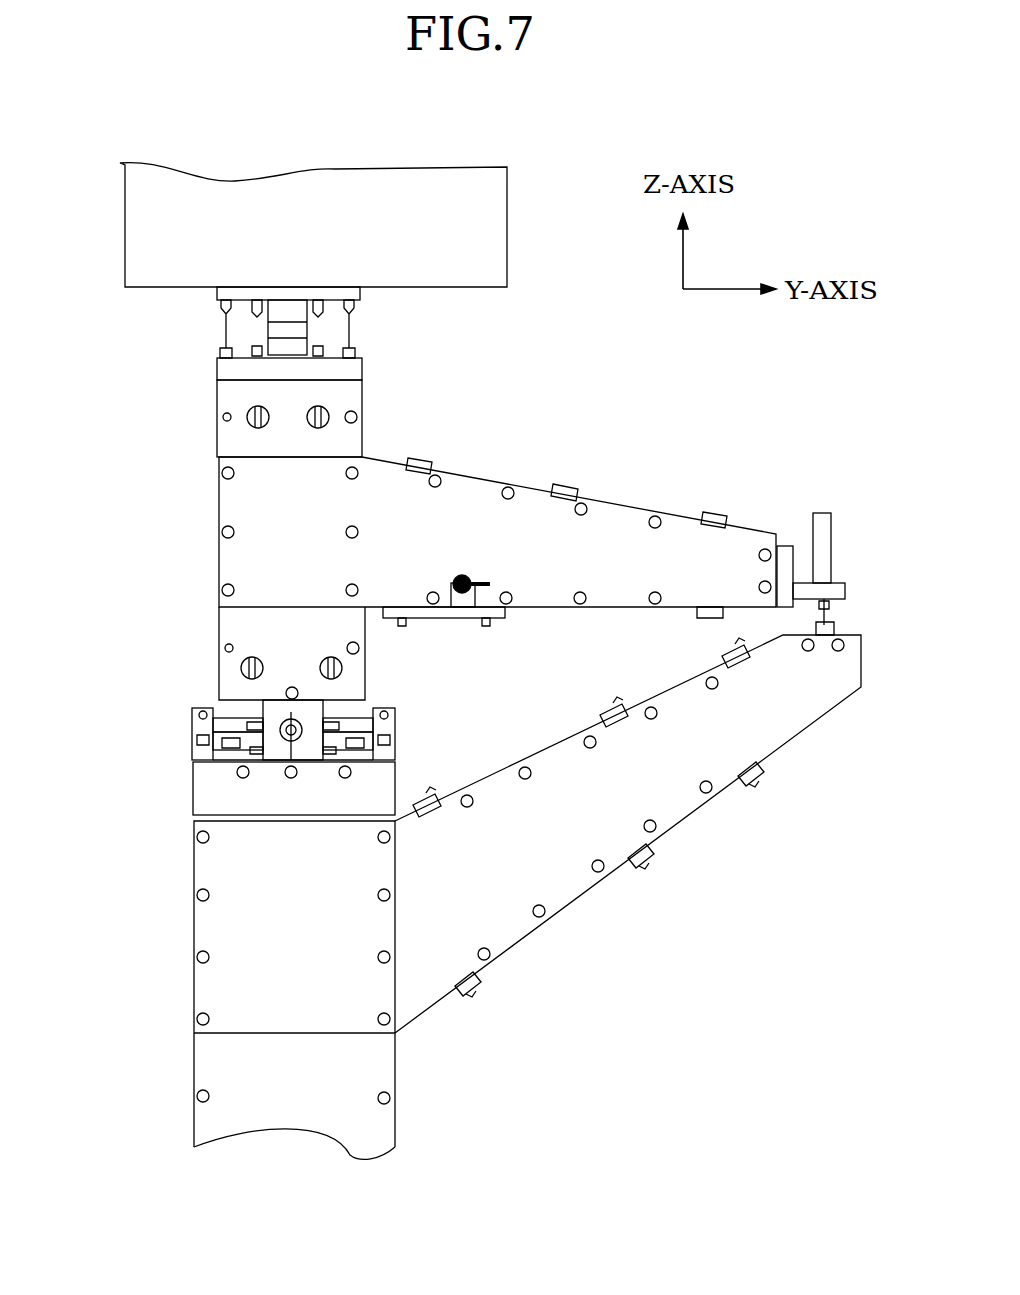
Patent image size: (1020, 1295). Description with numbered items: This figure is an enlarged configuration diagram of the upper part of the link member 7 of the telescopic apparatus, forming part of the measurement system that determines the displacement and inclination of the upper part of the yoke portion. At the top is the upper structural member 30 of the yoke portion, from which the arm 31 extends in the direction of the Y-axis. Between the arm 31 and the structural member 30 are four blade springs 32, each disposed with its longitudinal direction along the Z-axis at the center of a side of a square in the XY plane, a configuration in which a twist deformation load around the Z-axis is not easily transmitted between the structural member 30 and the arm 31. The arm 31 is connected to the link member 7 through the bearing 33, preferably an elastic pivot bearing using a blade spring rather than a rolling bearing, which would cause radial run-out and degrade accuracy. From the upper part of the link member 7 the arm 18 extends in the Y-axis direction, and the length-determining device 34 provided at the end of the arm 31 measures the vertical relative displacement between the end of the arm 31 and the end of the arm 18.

The upper structural member 30 is at (120, 266).
The blade springs 32 is at (218, 334).
The arm 31 is at (493, 480).
The length-determining device 34 is at (834, 547).
The bearing 33 is at (290, 730).
The arm 18 is at (680, 832).
The link member 7 is at (193, 1063).